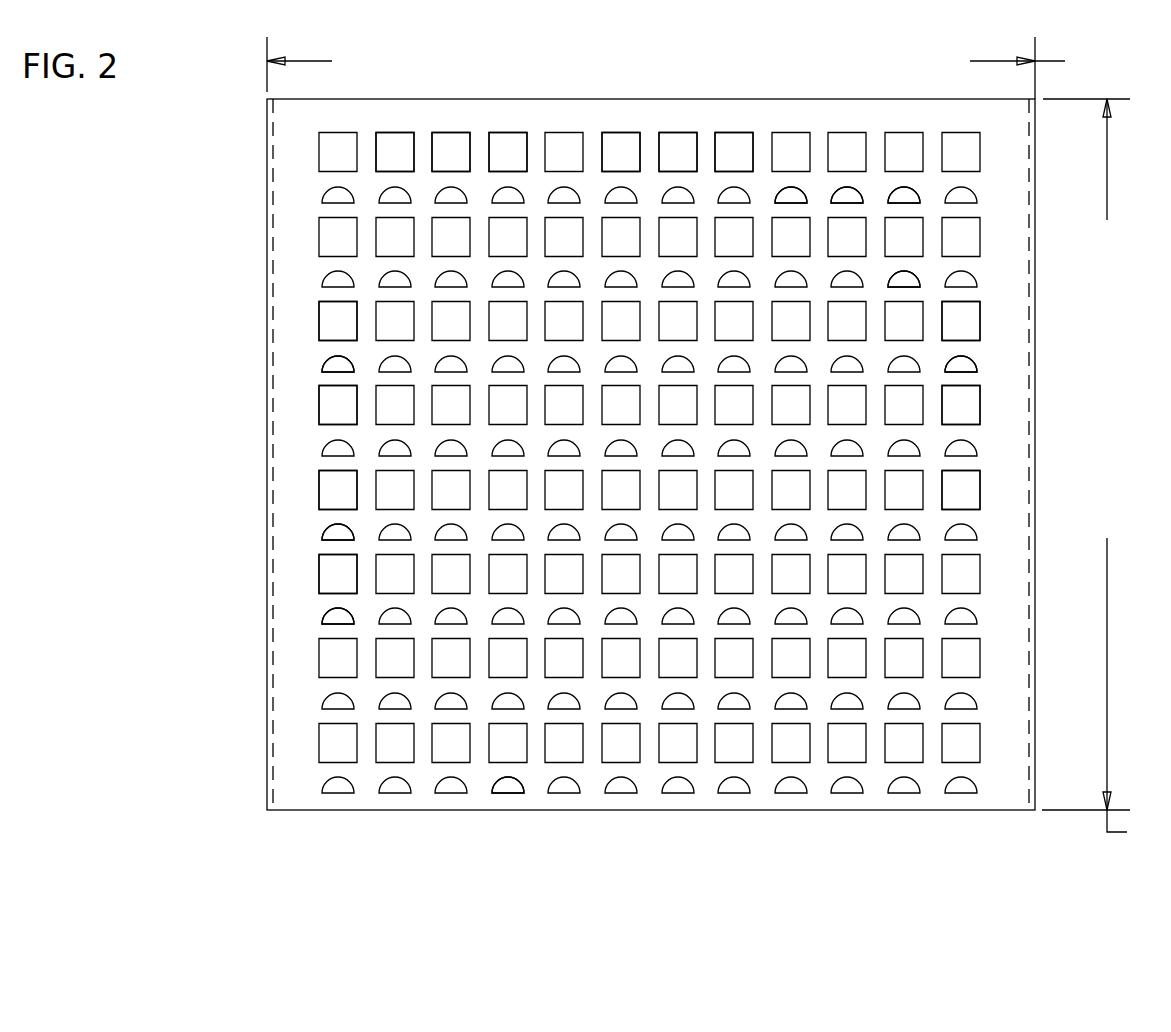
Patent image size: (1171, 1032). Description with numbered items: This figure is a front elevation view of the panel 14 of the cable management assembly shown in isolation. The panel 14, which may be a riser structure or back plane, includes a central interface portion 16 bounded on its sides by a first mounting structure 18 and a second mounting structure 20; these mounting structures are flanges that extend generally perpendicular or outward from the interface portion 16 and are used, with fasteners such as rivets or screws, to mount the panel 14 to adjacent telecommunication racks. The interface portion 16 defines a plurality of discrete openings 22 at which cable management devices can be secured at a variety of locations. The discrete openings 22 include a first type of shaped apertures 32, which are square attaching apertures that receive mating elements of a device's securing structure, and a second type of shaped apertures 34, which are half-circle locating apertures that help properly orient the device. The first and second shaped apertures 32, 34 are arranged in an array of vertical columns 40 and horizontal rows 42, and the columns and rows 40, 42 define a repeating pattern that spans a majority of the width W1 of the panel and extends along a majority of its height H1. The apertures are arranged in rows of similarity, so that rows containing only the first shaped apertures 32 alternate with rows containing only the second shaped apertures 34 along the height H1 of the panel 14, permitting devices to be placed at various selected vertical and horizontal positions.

The panel 14 is at (200, 168).
The interface portion 16 is at (993, 463).
The first mounting structure 18 is at (274, 262).
The second mounting structure 20 is at (1031, 258).
The discrete openings 22 is at (322, 618).
The first shaped apertures 32 is at (735, 133).
The second shaped apertures 34 is at (904, 187).
The vertical columns 40 is at (393, 121).
The horizontal rows 42 is at (297, 323).
The width W1 is at (687, 68).
The height H1 is at (1102, 471).